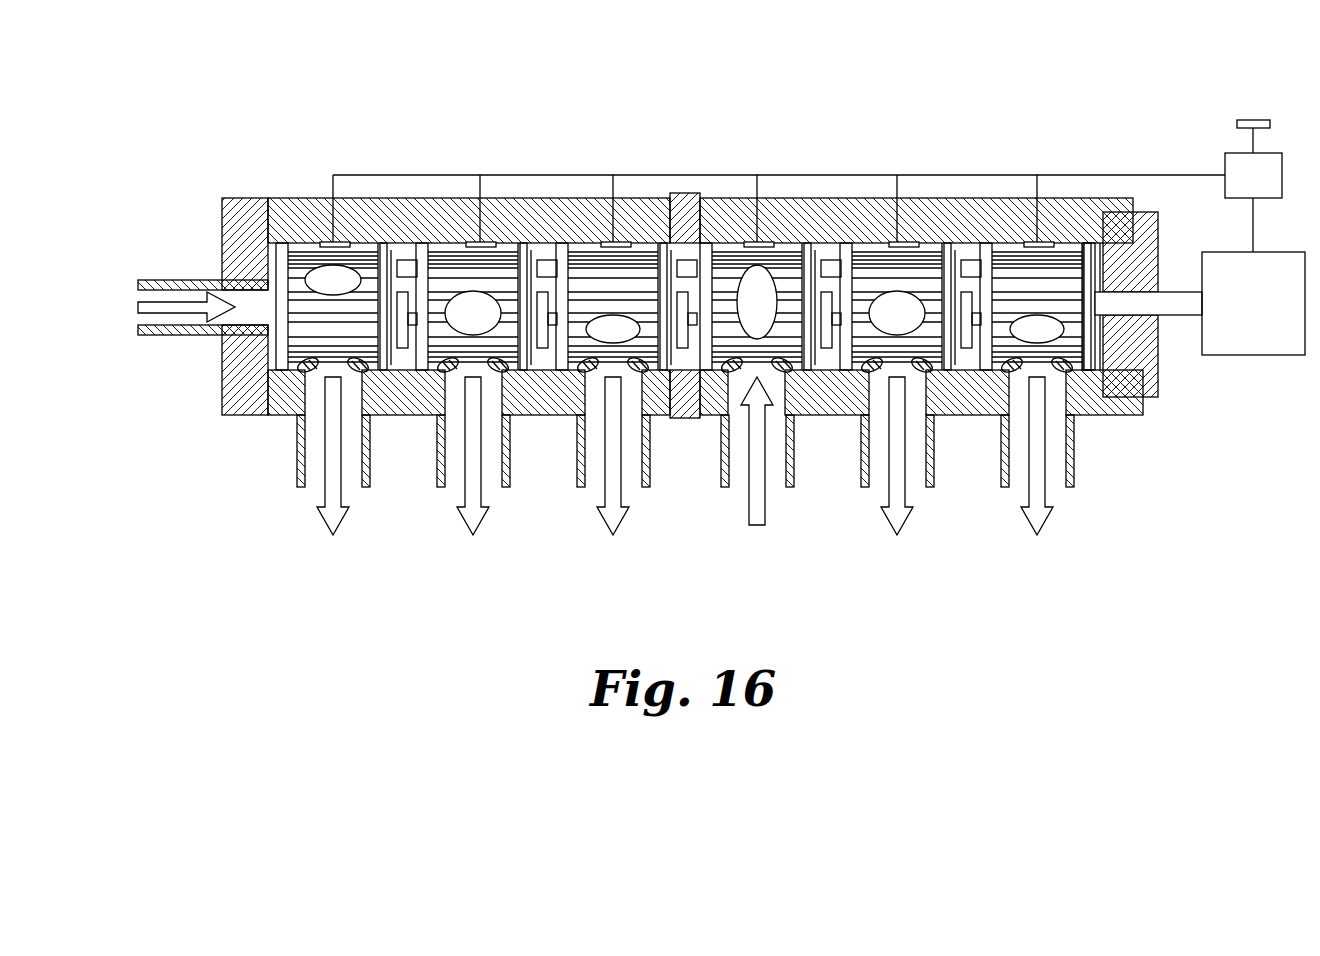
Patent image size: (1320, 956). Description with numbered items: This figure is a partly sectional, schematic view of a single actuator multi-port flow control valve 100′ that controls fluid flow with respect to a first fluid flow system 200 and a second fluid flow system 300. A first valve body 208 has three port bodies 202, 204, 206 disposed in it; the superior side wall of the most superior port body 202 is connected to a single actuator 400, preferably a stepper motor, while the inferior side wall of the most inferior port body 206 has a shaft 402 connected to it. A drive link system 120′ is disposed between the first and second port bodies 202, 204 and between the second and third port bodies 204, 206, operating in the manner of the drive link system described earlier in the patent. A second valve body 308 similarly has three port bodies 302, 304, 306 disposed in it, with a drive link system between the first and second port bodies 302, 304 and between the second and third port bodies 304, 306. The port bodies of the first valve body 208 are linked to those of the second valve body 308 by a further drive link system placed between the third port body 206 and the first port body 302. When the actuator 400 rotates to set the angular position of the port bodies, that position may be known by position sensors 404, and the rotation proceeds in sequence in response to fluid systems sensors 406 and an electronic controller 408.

The single actuator multi-port flow control valve 100′ is at (656, 364).
The second valve body 308 is at (281, 196).
The position sensors 404 is at (325, 242).
The third port body of the second valve body 306 is at (358, 251).
The second port body of the second valve body 304 is at (501, 251).
The first port body of the second valve body 302 is at (641, 251).
The first valve body 208 is at (704, 195).
The third port body of the first valve body 206 is at (779, 251).
The second port body of the first valve body 204 is at (926, 251).
The first port body of the first valve body 202 is at (1063, 251).
The fluid systems sensors 406 is at (1248, 120).
The electronic controller 408 is at (1232, 153).
The shaft 402 is at (1188, 316).
The single actuator 400 is at (1252, 356).
The drive link system 120′ is at (824, 362).
The second fluid flow system 300 is at (428, 390).
The first fluid flow system 200 is at (908, 385).